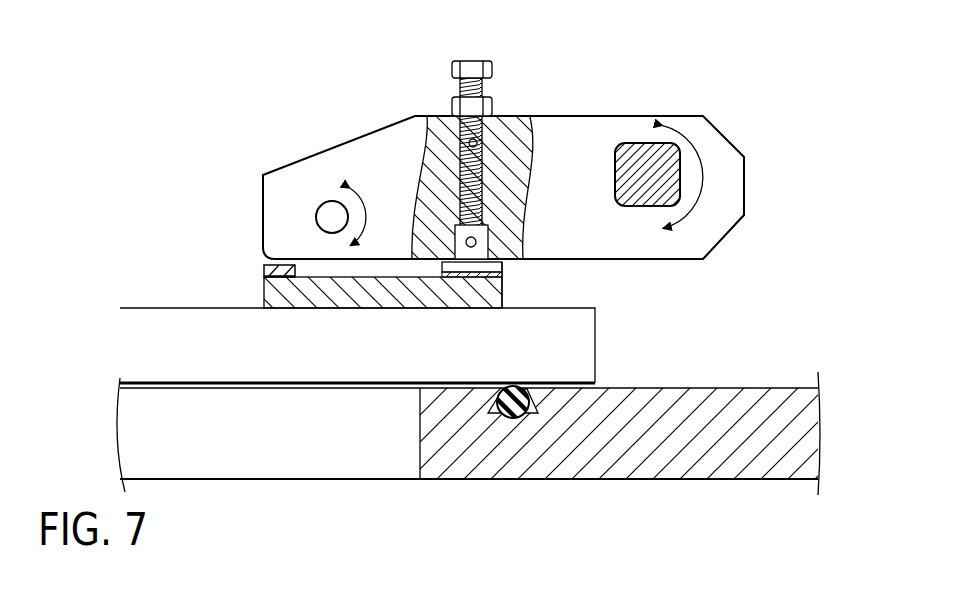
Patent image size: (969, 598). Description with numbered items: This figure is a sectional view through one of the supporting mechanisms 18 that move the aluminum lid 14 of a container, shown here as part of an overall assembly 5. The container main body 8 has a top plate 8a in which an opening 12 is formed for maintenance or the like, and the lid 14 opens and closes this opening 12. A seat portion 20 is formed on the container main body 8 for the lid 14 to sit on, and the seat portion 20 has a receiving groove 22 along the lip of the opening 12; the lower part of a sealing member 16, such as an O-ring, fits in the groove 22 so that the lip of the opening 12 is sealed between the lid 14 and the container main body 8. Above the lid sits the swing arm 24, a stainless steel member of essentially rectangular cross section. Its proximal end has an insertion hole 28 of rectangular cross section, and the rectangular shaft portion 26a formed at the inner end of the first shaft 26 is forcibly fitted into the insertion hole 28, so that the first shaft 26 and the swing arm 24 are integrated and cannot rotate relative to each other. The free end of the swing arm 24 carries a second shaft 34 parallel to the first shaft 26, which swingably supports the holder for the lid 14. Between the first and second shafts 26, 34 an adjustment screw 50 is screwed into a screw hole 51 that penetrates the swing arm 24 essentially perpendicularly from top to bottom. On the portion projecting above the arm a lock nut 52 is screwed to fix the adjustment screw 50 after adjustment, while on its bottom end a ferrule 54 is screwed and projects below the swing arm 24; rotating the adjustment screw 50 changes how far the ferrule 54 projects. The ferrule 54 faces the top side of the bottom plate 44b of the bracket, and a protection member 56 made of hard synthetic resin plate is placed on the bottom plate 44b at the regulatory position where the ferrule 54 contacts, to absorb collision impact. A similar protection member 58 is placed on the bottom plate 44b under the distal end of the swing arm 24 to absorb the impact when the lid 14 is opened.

The joint structure 5 is at (360, 516).
The container main body 8 is at (805, 437).
The top plate 8a is at (750, 388).
The opening 12 is at (135, 418).
The lid 14 is at (165, 318).
The sealing member 16 is at (510, 394).
The supporting mechanism 18 is at (690, 90).
The seat portion 20 is at (543, 388).
The receiving groove 22 is at (490, 410).
The swing arm 24 is at (569, 116).
The first shaft 26 is at (678, 173).
The rectangular shaft portion 26a is at (672, 163).
The insertion hole 28 is at (645, 143).
The second shaft 34 is at (330, 200).
The bottom plate 44b is at (264, 293).
The adjustment screw 50 is at (480, 50).
The screw hole 51 is at (476, 139).
The lock nut 52 is at (452, 104).
The ferrule 54 is at (502, 265).
The protection member 56 is at (502, 273).
The protection member 58 is at (264, 264).